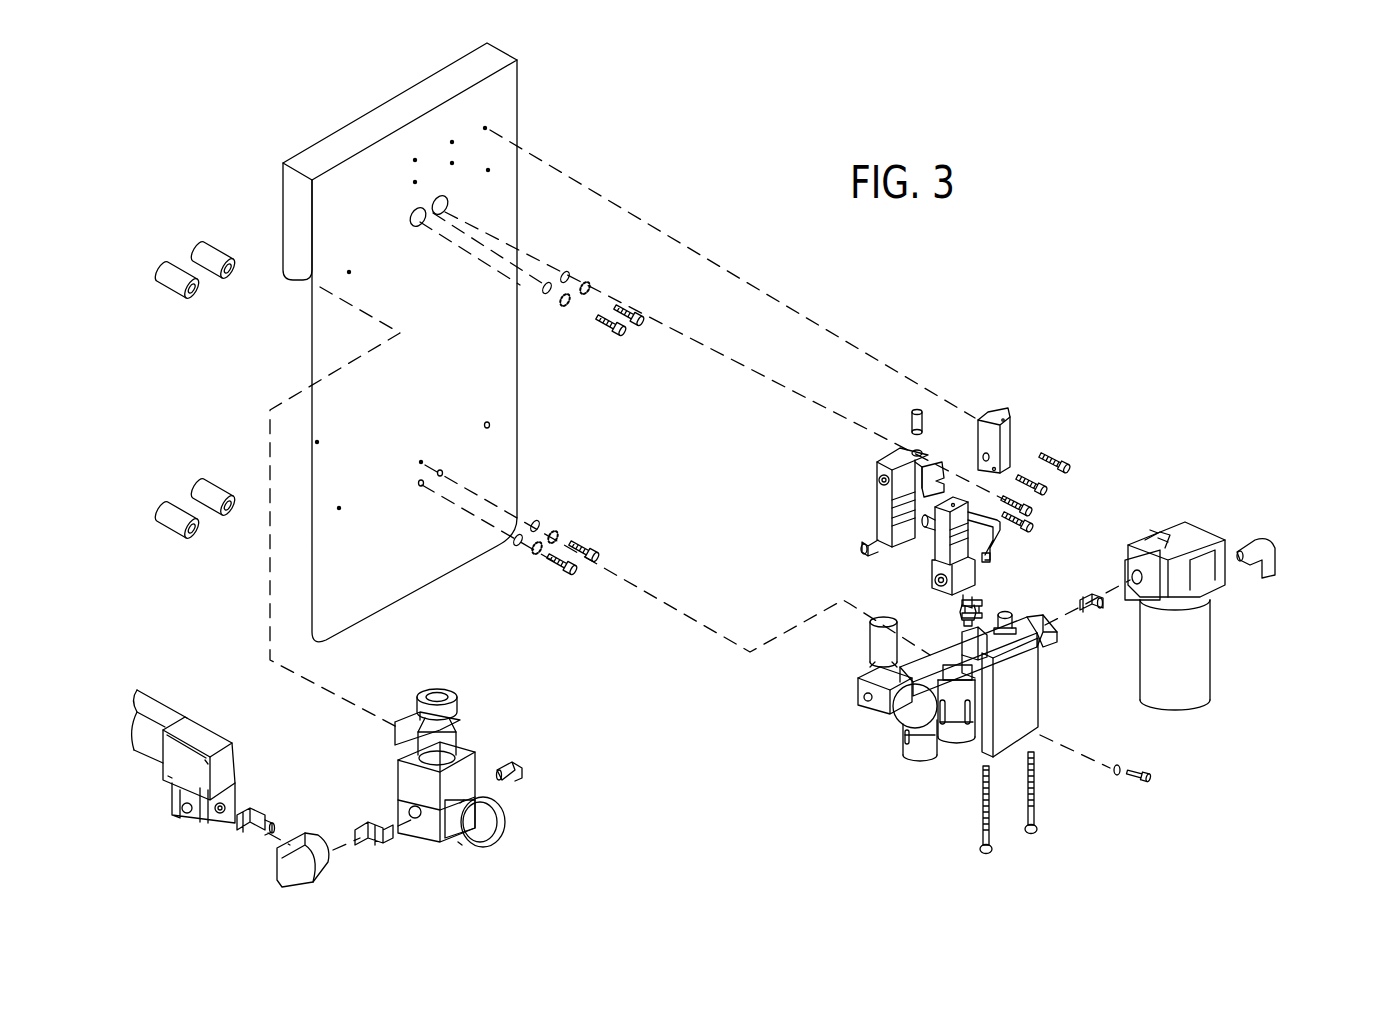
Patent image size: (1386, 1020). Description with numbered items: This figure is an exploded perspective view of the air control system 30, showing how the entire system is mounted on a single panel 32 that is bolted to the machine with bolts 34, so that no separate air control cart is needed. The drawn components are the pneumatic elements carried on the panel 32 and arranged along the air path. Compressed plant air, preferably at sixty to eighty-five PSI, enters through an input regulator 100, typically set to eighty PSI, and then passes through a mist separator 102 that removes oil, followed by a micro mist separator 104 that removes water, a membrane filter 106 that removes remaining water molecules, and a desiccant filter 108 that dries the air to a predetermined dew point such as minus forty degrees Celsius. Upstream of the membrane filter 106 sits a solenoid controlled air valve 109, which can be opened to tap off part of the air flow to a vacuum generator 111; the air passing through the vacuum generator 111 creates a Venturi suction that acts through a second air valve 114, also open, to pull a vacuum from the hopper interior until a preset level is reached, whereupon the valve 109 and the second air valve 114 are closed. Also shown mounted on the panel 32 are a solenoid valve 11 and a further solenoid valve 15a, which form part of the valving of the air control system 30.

The air control system 30 is at (1278, 394).
The panel 32 is at (442, 380).
The bolts 34 is at (625, 333).
The solenoid valve 11 is at (897, 458).
The vacuum generator 111 is at (1028, 412).
The second air valve 114 is at (830, 472).
The solenoid controlled air valve 109 is at (930, 562).
The desiccant filter 108 is at (1197, 652).
The input regulator 100 is at (880, 642).
The mist separator 102 is at (917, 737).
The micro mist separator 104 is at (957, 728).
The membrane filter 106 is at (1027, 728).
The solenoid valve 15a is at (192, 760).